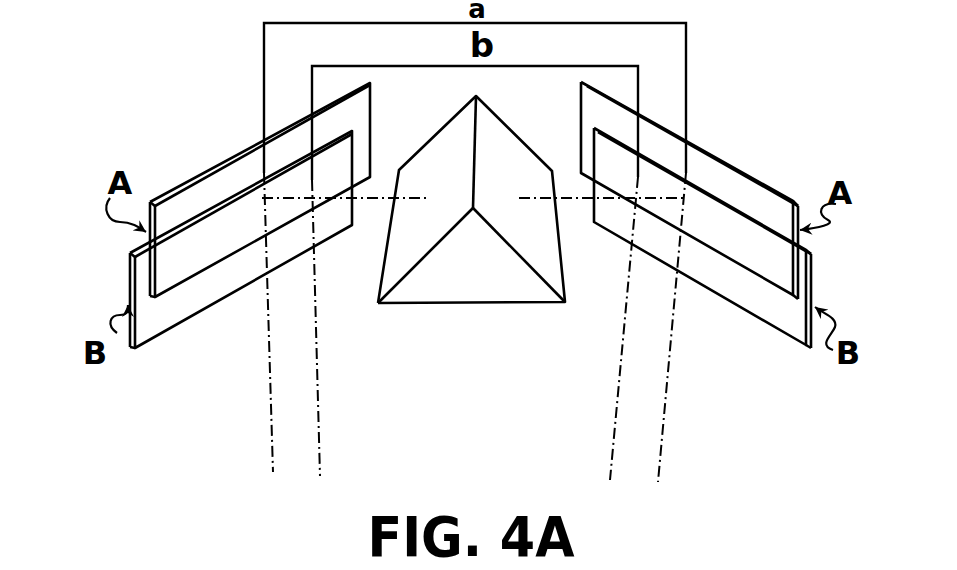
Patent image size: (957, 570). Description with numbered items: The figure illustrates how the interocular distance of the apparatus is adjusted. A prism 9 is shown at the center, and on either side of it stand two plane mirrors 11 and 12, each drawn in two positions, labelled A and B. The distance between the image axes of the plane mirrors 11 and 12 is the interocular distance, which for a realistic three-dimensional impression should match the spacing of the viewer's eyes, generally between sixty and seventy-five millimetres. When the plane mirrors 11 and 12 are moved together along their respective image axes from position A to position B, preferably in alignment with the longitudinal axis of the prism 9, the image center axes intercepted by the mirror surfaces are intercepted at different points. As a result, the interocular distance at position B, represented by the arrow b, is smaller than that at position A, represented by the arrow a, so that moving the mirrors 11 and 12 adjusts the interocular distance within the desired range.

The prism 9 is at (548, 242).
The plane mirror 11 is at (95, 218).
The plane mirror 12 is at (824, 232).